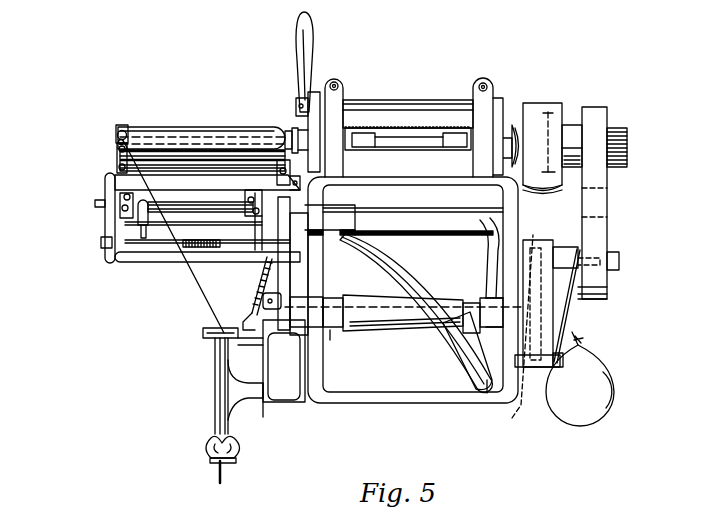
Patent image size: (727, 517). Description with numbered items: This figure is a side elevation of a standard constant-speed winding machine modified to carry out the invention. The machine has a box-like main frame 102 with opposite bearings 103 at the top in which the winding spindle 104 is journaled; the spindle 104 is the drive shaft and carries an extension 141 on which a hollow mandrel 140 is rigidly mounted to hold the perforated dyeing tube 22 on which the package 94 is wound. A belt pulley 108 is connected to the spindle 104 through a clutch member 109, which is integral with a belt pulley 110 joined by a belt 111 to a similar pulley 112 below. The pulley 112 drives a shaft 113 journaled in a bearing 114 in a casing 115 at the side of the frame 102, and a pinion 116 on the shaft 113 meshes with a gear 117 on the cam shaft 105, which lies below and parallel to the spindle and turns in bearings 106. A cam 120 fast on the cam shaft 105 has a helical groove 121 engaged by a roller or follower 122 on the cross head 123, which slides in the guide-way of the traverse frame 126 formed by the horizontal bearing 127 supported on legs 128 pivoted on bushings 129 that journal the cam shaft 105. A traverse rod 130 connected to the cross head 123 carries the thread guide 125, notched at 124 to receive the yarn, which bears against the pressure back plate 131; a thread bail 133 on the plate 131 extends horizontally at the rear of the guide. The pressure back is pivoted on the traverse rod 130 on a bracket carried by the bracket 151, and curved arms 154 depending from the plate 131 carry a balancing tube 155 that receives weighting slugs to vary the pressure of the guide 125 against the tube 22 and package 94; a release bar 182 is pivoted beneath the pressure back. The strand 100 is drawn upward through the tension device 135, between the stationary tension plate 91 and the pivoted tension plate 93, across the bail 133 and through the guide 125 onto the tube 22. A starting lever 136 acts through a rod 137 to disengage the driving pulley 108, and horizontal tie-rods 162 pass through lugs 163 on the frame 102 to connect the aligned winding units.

The perforated dyeing tube 22 is at (181, 135).
The stationary tension plate 91 is at (233, 423).
The pivoted tension plate 93 is at (212, 426).
The package 94 is at (136, 126).
The strand 100 is at (203, 290).
The main frame 102 is at (515, 218).
The bearings 103 is at (368, 147).
The winding spindle 104 is at (405, 142).
The cam shaft 105 is at (392, 333).
The bearings 106 is at (495, 298).
The belt pulley 108 is at (541, 108).
The clutch member 109 is at (556, 122).
The belt pulley 110 is at (601, 121).
The belt 111 is at (600, 206).
The pulley 112 is at (603, 242).
The shaft 113 is at (616, 265).
The bearing 114 is at (590, 242).
The casing 115 is at (563, 300).
The pinion 116 is at (533, 243).
The gear 117 is at (520, 415).
The cam 120 is at (446, 375).
The helical groove 121 is at (398, 300).
The roller or follower 122 is at (340, 240).
The cross head 123 is at (342, 229).
The notch 124 is at (122, 130).
The thread guide 125 is at (118, 136).
The traverse frame 126 is at (411, 212).
The horizontal bearing 127 is at (466, 215).
The legs 128 is at (492, 236).
The bushings 129 is at (334, 340).
The traverse rod 130 is at (95, 204).
The pressure back plate 131 is at (130, 184).
The thread bail 133 is at (115, 147).
The tension device 135 is at (214, 371).
The starting lever 136 is at (306, 28).
The rod 137 is at (396, 102).
The hollow mandrel 140 is at (296, 130).
The spindle extension 141 is at (205, 150).
The bracket 151 is at (280, 284).
The curved arms 154 is at (110, 244).
The balancing tube 155 is at (130, 262).
The tie-rods 162 is at (340, 86).
The lugs 163 is at (334, 78).
The release bar 182 is at (108, 226).